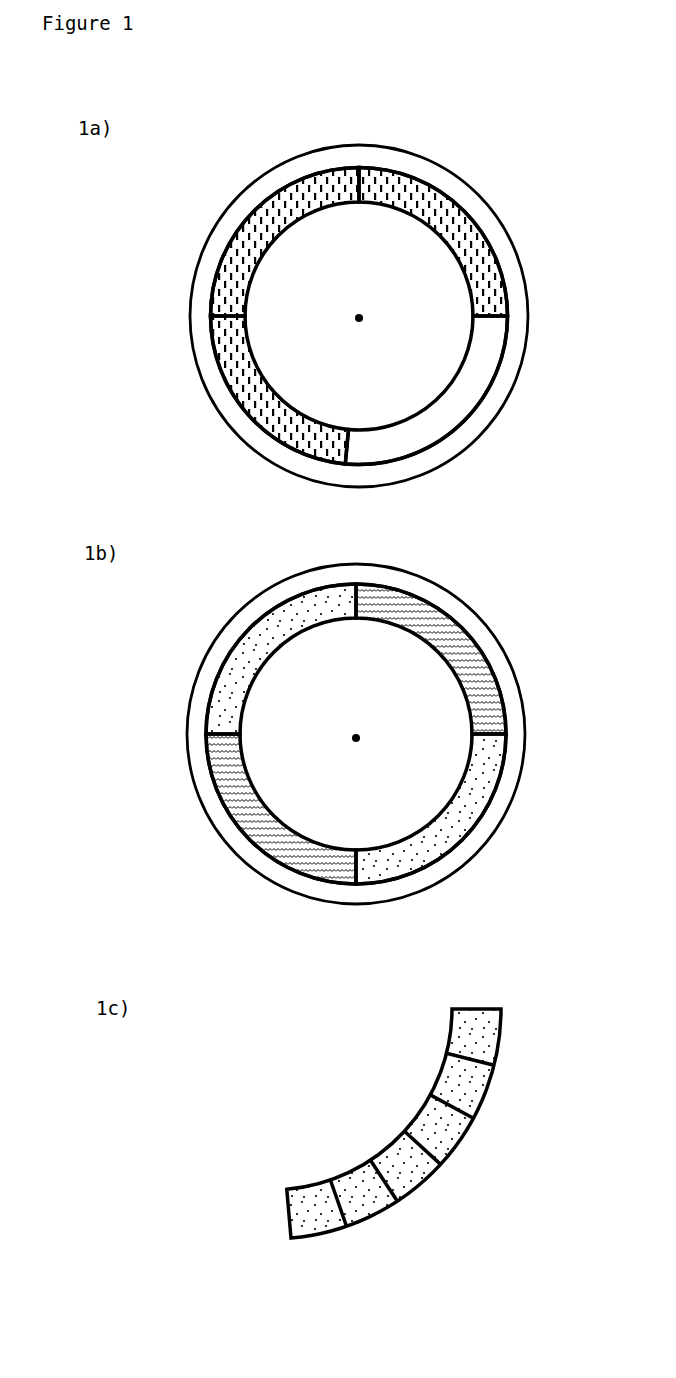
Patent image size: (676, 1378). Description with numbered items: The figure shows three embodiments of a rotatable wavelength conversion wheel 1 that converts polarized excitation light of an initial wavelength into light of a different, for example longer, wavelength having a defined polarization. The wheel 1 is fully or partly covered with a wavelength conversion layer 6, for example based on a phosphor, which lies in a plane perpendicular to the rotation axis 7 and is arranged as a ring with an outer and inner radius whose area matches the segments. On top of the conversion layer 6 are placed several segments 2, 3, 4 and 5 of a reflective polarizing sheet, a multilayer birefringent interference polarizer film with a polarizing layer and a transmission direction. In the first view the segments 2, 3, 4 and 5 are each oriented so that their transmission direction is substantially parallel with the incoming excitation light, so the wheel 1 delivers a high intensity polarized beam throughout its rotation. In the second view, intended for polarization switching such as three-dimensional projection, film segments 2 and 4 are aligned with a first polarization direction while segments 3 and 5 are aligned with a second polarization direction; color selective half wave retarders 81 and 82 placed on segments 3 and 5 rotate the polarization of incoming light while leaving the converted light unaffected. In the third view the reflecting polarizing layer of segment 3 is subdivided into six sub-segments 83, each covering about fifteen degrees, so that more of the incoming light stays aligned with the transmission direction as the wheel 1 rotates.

In FIG. 1a, the wavelength conversion wheel 1 is at (403, 155).
In FIG. 1b, the wavelength conversion wheel 1 is at (400, 575).
In FIG. 1a, the reflective polarizing sheet segment 2 is at (468, 212).
In FIG. 1b, the reflective polarizing sheet segment 2 is at (462, 632).
In FIG. 1a, the reflective polarizing sheet segment 3 is at (493, 382).
In FIG. 1b, the reflective polarizing sheet segment 3 is at (457, 809).
In FIG. 1c, the reflective polarizing sheet segment 3 is at (422, 1131).
In FIG. 1a, the reflective polarizing sheet segment 4 is at (238, 412).
In FIG. 1b, the reflective polarizing sheet segment 4 is at (235, 826).
In FIG. 1a, the reflective polarizing sheet segment 5 is at (273, 190).
In FIG. 1b, the reflective polarizing sheet segment 5 is at (261, 651).
In FIG. 1a, the wavelength conversion layer 6 is at (310, 160).
In FIG. 1b, the wavelength conversion layer 6 is at (307, 580).
In FIG. 1a, the rotation axis 7 is at (362, 313).
In FIG. 1b, the rotation axis 7 is at (357, 733).
In FIG. 1b, the color selective half wave retarder 81 is at (452, 830).
In FIG. 1b, the color selective half wave retarder 82 is at (237, 667).
In FIG. 1c, the sub-segment 83 is at (483, 1042).